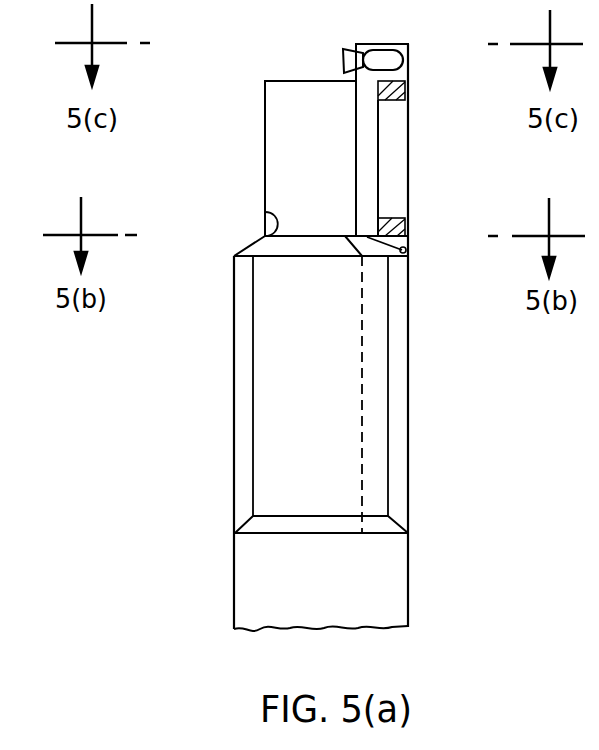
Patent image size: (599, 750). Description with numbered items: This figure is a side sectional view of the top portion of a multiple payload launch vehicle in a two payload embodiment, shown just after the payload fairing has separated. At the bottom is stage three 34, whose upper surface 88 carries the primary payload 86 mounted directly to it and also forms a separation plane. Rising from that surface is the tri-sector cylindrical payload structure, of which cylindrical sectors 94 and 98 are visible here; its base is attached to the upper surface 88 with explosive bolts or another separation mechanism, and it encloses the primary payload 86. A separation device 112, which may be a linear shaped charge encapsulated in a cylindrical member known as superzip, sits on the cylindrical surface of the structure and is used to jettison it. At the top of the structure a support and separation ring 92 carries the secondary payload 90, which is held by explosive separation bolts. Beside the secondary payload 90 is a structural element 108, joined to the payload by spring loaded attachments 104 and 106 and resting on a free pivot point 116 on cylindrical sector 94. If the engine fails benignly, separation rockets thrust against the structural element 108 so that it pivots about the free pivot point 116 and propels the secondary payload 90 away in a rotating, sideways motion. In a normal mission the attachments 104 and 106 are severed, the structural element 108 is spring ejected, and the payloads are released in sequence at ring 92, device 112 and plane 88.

The stage three 34 is at (408, 578).
The primary payload 86 is at (253, 382).
The upper surface 88 is at (268, 514).
The secondary payload 90 is at (265, 158).
The support and separation ring 92 is at (265, 216).
The cylindrical sector 94 is at (408, 365).
The cylindrical sector 98 is at (270, 343).
The spring loaded attachment 104 is at (408, 88).
The spring loaded attachment 106 is at (405, 227).
The structural element 108 is at (408, 155).
The separation device 112 is at (368, 316).
The free pivot point 116 is at (406, 251).